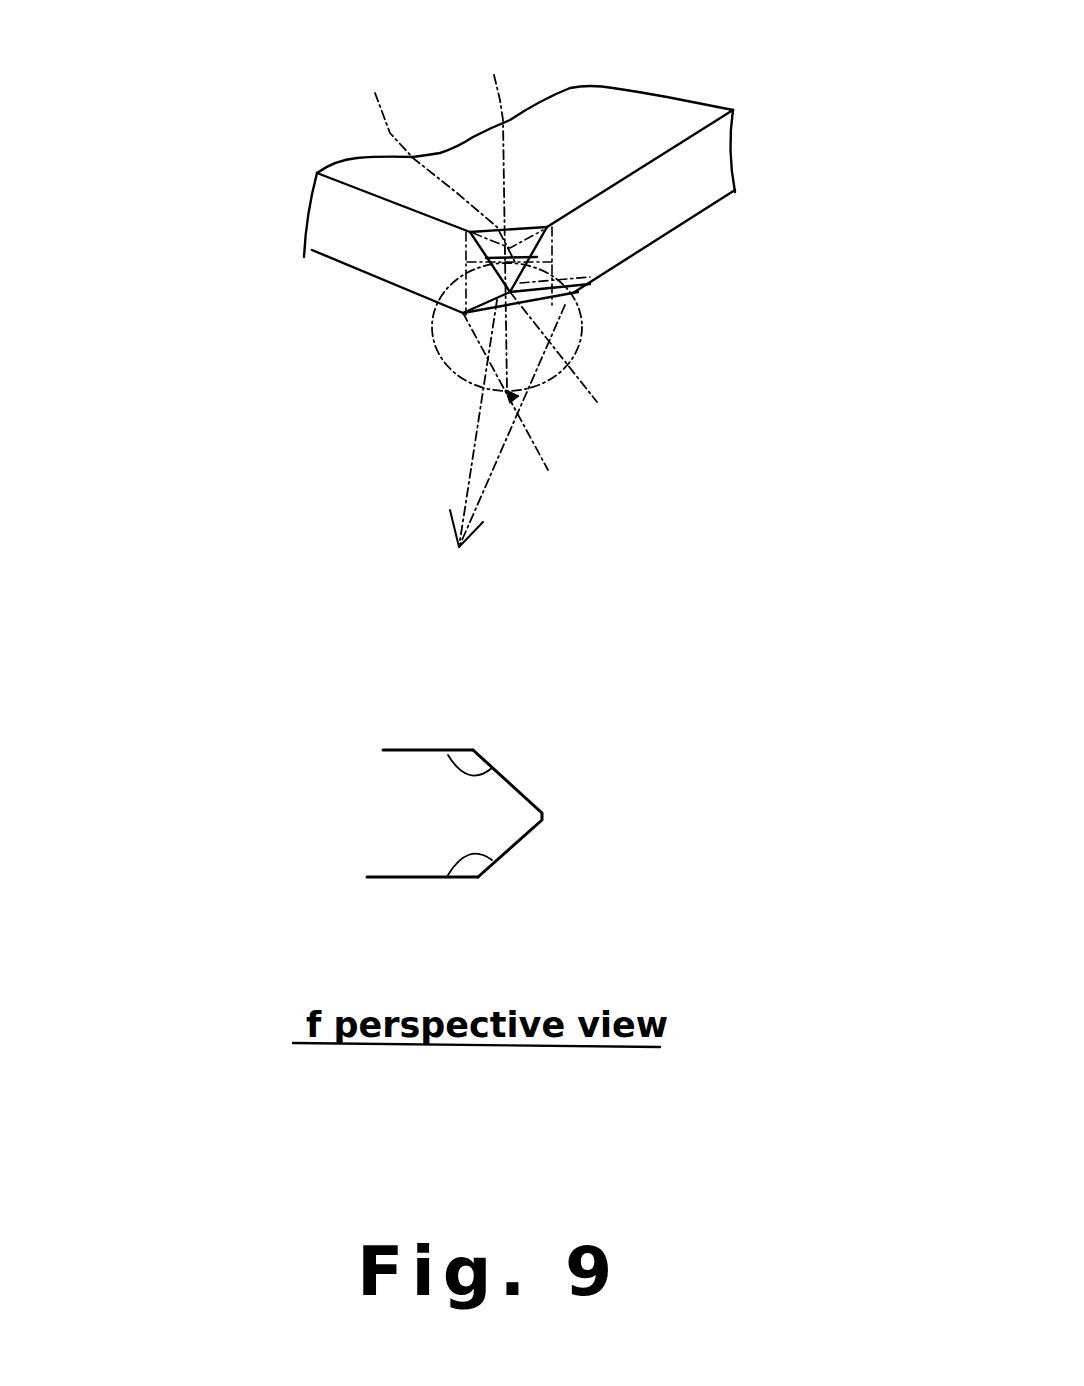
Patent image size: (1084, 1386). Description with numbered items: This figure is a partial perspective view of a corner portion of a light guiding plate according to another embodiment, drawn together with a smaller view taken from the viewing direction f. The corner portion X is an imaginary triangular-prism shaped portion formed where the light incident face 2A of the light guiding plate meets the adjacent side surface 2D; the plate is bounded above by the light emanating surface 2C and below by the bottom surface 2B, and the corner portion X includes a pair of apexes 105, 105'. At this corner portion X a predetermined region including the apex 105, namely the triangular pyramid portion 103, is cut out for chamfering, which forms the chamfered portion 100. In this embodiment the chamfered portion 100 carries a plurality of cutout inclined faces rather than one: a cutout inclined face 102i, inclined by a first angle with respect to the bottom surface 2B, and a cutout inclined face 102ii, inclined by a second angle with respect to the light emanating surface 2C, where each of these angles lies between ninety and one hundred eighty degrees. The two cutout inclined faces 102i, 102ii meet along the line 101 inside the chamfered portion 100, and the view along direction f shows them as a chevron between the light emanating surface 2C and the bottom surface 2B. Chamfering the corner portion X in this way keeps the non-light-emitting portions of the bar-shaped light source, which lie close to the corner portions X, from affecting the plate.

The light incident face 2A is at (337, 215).
The bottom surface 2B is at (700, 217).
The light emanating surface 2C is at (587, 123).
The side surface 2D is at (715, 152).
The chamfered portion 100 is at (478, 333).
The groove bottom line 101 is at (590, 284).
The cutout inclined face 102i is at (522, 312).
The cutout inclined face 102ii is at (427, 300).
The triangular pyramid portion 103 is at (545, 340).
The apex 105 is at (525, 423).
The apex 105' is at (466, 227).
The corner portion X is at (528, 219).
The viewing direction f is at (331, 324).